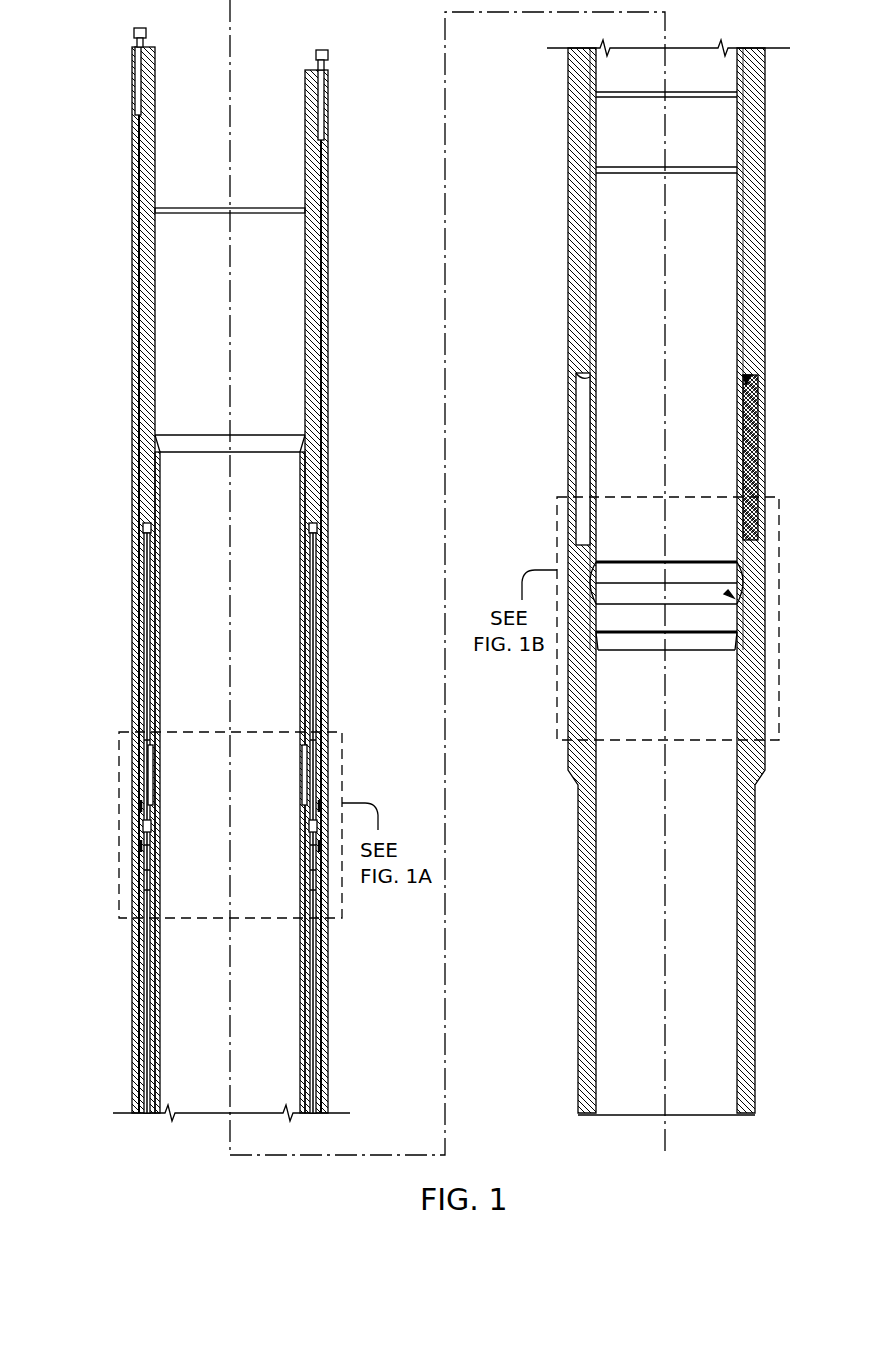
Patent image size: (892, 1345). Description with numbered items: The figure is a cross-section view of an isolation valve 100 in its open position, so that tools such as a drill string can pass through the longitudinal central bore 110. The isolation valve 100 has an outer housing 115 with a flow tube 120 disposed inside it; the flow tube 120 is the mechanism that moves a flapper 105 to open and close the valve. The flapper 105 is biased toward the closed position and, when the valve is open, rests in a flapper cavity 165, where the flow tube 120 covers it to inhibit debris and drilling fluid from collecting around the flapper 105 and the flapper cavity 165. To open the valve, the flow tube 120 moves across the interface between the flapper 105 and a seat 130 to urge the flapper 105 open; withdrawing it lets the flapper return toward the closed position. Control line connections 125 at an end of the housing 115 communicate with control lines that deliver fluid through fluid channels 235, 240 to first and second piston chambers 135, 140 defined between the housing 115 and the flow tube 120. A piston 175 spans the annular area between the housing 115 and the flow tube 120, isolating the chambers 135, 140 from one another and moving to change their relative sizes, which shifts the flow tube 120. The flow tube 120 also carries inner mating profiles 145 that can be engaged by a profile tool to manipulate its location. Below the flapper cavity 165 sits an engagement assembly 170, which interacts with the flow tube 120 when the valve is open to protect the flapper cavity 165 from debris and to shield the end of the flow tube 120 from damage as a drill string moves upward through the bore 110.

The isolation valve 100 is at (86, 219).
The flapper 105 is at (762, 459).
The longitudinal central bore 110 is at (186, 590).
The outer housing 115 is at (140, 487).
The flow tube 120 is at (148, 679).
The control line connections 125 is at (138, 32).
The seat 130 is at (579, 374).
The first piston chamber 135 is at (134, 856).
The second piston chamber 140 is at (148, 738).
The inner mating profiles 145 is at (736, 155).
The flapper cavity 165 is at (582, 460).
The engagement assembly 170 is at (745, 562).
The piston 175 is at (327, 765).
The fluid channel 235 is at (144, 547).
The fluid channel 240 is at (328, 341).